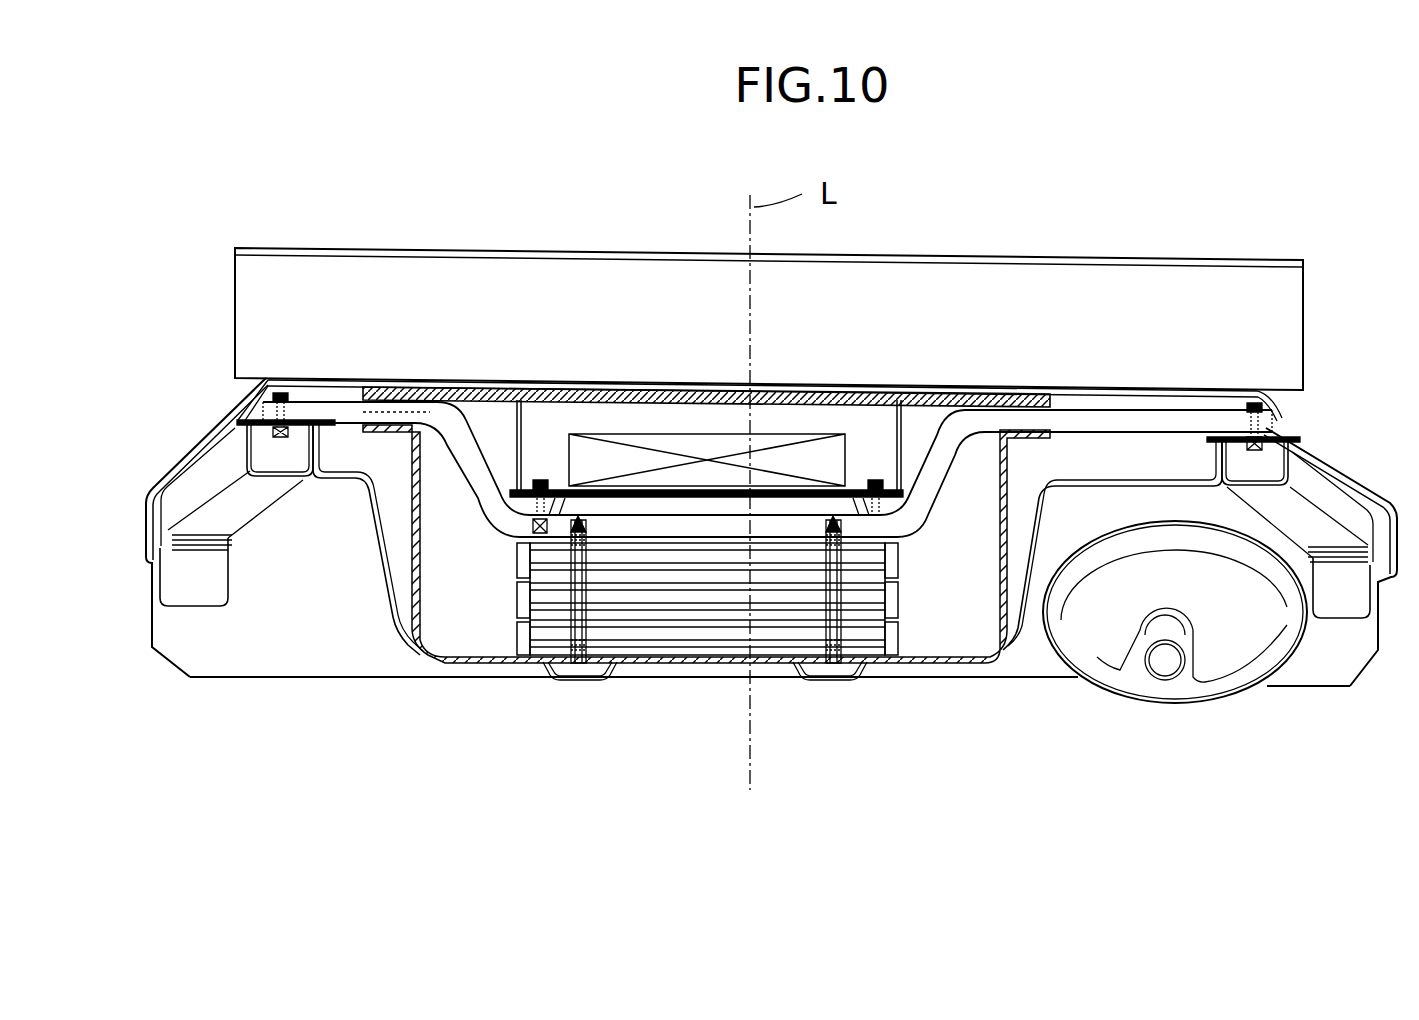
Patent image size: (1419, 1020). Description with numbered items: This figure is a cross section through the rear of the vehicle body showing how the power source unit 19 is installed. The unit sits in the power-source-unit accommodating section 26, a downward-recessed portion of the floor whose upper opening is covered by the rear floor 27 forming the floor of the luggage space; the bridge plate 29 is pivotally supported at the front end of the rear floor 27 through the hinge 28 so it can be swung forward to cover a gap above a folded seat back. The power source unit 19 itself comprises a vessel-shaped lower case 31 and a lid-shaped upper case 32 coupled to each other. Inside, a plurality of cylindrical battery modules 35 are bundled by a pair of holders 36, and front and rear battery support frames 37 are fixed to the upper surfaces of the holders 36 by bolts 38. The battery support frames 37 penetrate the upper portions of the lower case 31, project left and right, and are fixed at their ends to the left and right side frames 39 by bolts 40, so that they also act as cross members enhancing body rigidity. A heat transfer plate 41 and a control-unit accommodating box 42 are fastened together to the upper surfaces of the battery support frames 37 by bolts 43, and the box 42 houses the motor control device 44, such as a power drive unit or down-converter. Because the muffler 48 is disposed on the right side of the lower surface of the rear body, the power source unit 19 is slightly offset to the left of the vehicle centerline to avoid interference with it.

The power source unit 19 is at (411, 526).
The power-source-unit accommodating section 26 is at (397, 577).
The rear floor 27 is at (1288, 390).
The hinge 28 is at (704, 384).
The bridge plate 29 is at (637, 280).
The lower case 31 is at (1003, 480).
The upper case 32 is at (956, 392).
The battery modules 35 is at (690, 600).
The holders 36 is at (555, 553).
The battery support frames 37 is at (935, 495).
The bolts 38 is at (580, 668).
The side frames 39 is at (215, 477).
The bolts 40 is at (279, 394).
The heat transfer plate 41 is at (505, 513).
The control-unit accommodating box 42 is at (515, 440).
The bolts 43 is at (540, 480).
The motor control device 44 is at (691, 440).
The muffler 48 is at (1222, 658).